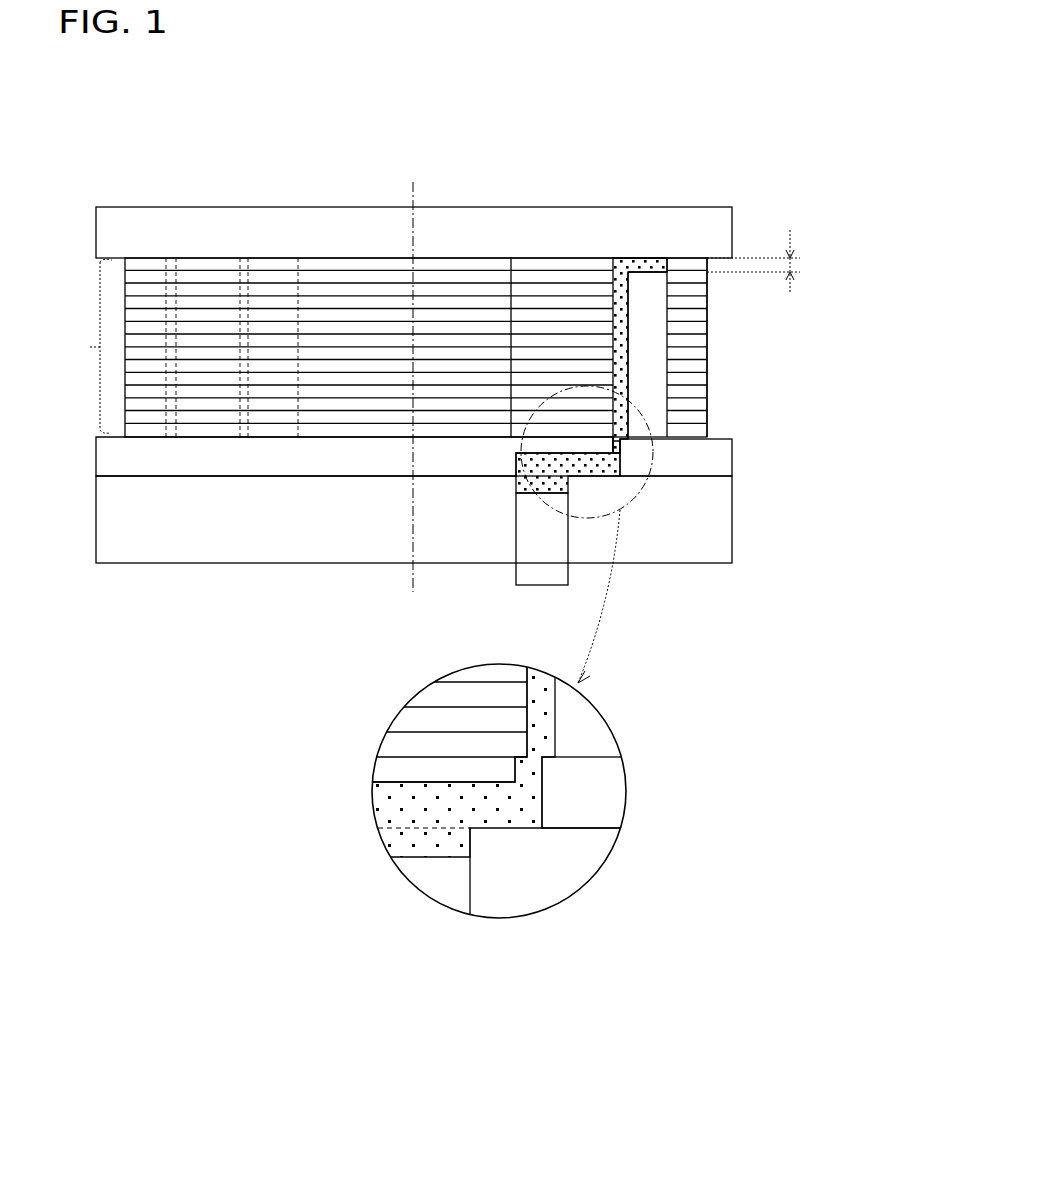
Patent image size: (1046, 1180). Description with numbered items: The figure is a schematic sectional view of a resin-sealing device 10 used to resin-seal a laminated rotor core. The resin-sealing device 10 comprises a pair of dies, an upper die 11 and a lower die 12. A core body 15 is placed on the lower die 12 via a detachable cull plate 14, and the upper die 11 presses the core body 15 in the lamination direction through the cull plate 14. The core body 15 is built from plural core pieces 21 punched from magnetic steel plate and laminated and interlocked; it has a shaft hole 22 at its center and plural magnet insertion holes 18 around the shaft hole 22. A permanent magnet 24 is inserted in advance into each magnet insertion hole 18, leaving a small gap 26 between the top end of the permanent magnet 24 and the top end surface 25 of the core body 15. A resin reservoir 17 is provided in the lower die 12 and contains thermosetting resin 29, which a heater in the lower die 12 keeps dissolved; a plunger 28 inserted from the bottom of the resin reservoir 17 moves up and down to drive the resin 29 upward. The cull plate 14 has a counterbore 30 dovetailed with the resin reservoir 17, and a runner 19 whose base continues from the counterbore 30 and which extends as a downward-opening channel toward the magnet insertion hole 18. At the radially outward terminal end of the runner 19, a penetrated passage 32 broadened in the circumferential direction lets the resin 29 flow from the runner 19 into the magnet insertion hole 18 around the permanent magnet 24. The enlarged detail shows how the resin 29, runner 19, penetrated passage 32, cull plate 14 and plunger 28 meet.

The resin-sealing device 10 is at (452, 549).
The upper die 11 is at (525, 235).
The lower die 12 is at (305, 547).
The cull plate 14 is at (700, 457).
The core body 15 is at (710, 377).
The resin reservoir 17 is at (517, 492).
The magnet insertion hole 18 is at (580, 300).
The runner 19 is at (618, 452).
The core piece 21 is at (452, 549).
The shaft hole 22 is at (500, 302).
The permanent magnet 24 is at (647, 322).
The top end surface 25 is at (215, 252).
The gap 26 is at (800, 263).
The plunger 28 is at (533, 567).
The resin 29 is at (393, 800).
The counterbore 30 is at (410, 815).
The penetrated passage 32 is at (643, 483).